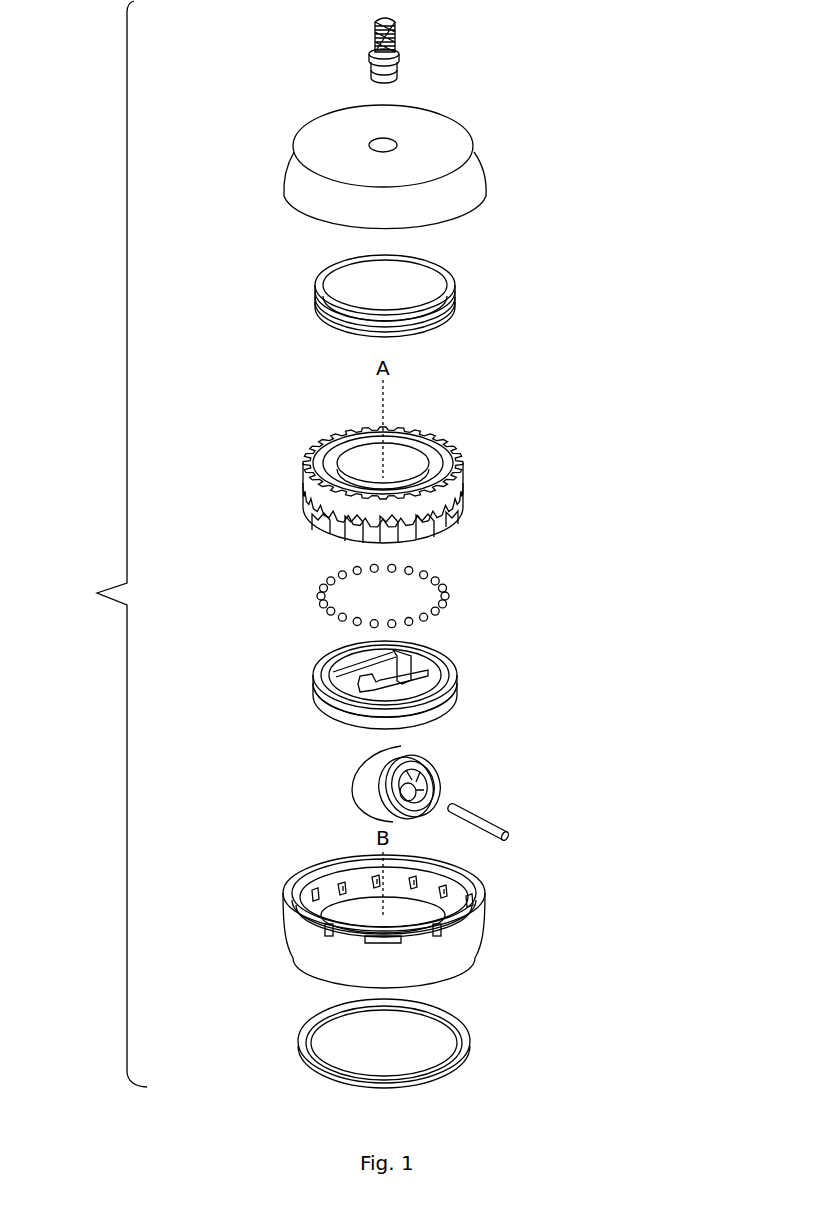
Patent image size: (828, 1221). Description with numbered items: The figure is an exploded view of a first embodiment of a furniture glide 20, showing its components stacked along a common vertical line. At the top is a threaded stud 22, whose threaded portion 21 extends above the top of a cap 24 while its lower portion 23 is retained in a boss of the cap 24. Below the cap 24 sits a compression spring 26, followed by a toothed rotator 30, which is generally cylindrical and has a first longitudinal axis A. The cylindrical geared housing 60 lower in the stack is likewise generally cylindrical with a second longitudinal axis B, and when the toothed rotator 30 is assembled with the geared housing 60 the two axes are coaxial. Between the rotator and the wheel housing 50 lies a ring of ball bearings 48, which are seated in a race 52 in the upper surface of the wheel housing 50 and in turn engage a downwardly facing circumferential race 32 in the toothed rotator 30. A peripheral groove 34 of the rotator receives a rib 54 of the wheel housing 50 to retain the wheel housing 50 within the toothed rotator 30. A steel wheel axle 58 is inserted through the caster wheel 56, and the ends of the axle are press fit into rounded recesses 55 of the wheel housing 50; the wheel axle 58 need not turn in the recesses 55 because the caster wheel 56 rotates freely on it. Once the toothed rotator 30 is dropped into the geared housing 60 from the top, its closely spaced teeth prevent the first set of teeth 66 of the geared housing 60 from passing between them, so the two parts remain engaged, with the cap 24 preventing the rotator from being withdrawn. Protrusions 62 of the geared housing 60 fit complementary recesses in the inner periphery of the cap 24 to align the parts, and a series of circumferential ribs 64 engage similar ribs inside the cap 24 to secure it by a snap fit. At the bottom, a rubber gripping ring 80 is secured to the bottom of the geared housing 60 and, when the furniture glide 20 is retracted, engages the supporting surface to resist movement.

The furniture glide 20 is at (97, 580).
The threaded portion 21 is at (377, 36).
The threaded stud 22 is at (404, 55).
The lower portion 23 is at (373, 68).
The cap 24 is at (477, 147).
The compression spring 26 is at (313, 293).
The toothed rotator 30 is at (336, 468).
The circumferential race 32 is at (385, 458).
The peripheral groove 34 is at (336, 472).
The ball bearings 48 is at (326, 616).
The wheel housing 50 is at (341, 690).
The race 52 is at (375, 692).
The rib 54 is at (338, 720).
The rounded recesses 55 is at (428, 679).
The caster wheel 56 is at (437, 788).
The wheel axle 58 is at (508, 831).
The cylindrical geared housing 60 is at (356, 911).
The protrusions 62 is at (456, 916).
The circumferential ribs 64 is at (370, 940).
The first set of teeth 66 is at (371, 882).
The rubber gripping ring 80 is at (430, 1086).